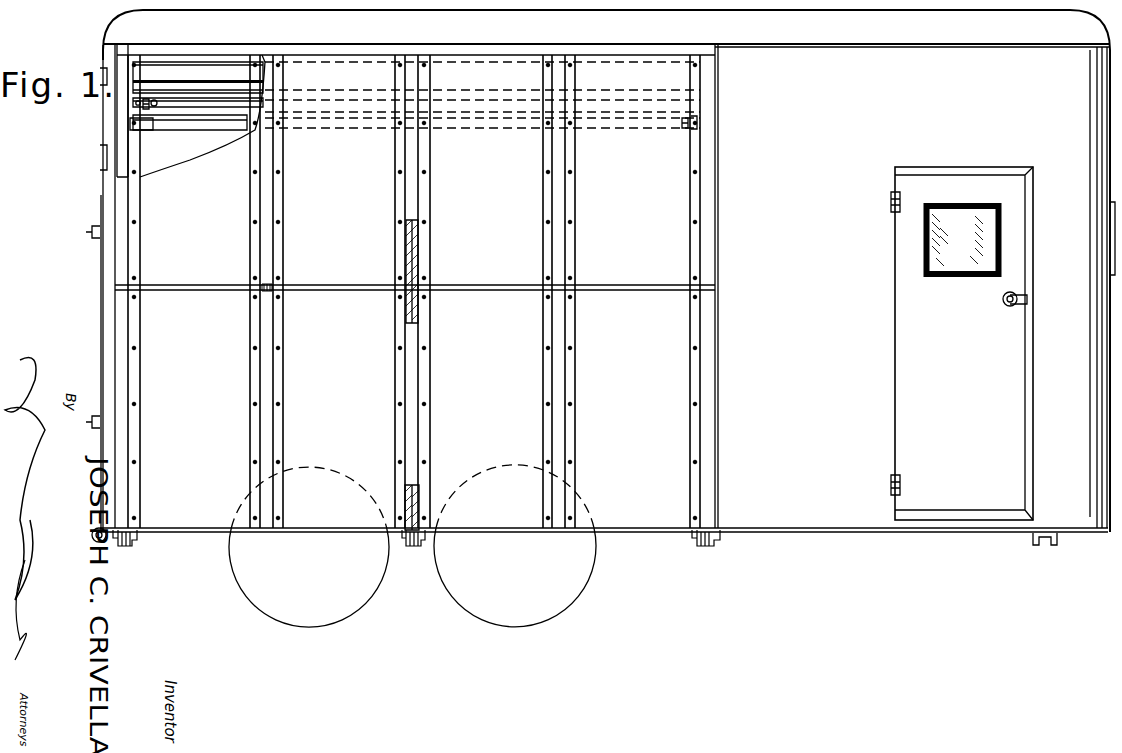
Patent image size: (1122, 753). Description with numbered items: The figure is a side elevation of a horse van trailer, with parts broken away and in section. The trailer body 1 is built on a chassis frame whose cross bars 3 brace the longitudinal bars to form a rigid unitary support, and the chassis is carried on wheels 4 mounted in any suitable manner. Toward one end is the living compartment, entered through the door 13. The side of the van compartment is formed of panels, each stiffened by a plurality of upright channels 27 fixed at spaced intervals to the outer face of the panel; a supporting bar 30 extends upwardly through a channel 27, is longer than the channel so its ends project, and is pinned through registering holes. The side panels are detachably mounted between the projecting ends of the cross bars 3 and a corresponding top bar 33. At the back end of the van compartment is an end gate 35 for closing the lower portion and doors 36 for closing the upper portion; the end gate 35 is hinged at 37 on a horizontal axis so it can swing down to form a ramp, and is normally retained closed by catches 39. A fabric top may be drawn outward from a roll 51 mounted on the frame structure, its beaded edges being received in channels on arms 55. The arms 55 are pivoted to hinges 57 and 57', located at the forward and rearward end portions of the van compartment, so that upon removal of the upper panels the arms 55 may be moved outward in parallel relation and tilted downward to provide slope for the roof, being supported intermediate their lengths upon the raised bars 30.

The trailer body 1 is at (92, 218).
The cross bars 3 is at (129, 546).
The wheels 4 is at (228, 562).
The door 13 is at (922, 324).
The upright channels 27 is at (410, 196).
The supporting bar 30 is at (419, 253).
The top bar 33 is at (362, 48).
The end gate 35 is at (110, 318).
The doors 36 is at (96, 108).
The hinge 37 is at (101, 542).
The catches 39 is at (90, 235).
The roll 51 is at (186, 78).
The arms 55 is at (228, 104).
The hinge 57 is at (110, 125).
The hinge 57' is at (720, 124).